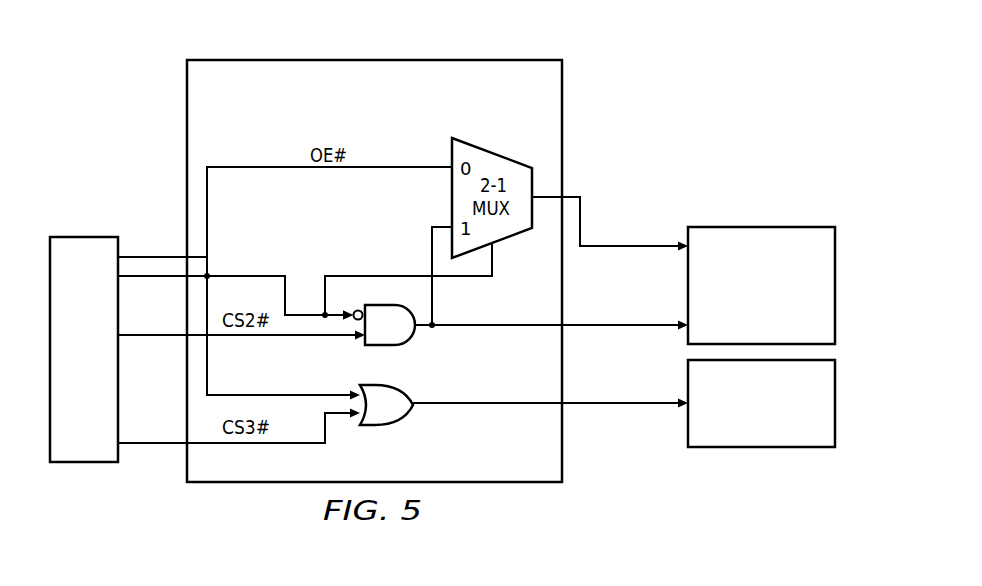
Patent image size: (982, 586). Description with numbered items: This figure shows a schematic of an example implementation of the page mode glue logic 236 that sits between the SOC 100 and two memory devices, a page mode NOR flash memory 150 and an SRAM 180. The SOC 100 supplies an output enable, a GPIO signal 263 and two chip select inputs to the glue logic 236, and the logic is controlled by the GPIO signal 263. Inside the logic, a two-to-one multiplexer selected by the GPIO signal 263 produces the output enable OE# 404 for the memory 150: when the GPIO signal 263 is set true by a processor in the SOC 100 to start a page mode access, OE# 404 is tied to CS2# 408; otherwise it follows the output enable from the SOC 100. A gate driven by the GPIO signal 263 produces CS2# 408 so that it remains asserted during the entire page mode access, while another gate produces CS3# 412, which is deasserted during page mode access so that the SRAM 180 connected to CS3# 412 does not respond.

The SOC 100 is at (85, 237).
The NOR flash 150 is at (760, 227).
The SRAM 180 is at (760, 447).
The page mode logic 236 is at (378, 60).
The GPIO signal 263 is at (155, 278).
The OE# signal 404 is at (633, 248).
The CS2# signal 408 is at (623, 328).
The CS3# signal 412 is at (623, 407).